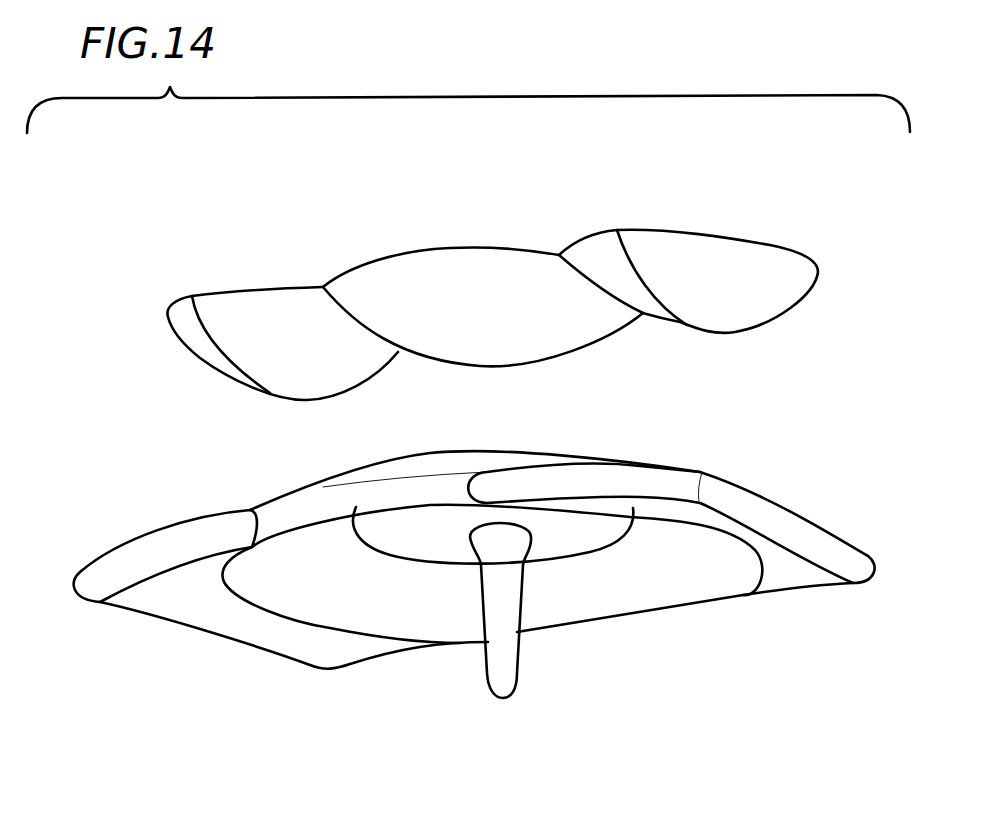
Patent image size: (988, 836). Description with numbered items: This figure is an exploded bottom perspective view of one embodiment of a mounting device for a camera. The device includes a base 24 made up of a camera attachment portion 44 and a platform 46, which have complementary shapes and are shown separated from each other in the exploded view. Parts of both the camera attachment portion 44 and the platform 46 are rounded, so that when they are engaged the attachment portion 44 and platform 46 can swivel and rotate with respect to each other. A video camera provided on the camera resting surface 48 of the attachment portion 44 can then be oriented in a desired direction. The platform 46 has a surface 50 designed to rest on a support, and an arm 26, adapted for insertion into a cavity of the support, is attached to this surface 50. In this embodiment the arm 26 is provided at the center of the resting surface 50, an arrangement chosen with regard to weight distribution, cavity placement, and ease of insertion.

The base 24 is at (135, 392).
The arm 26 is at (502, 675).
The camera attachment portion 44 is at (770, 245).
The platform 46 is at (810, 523).
The camera resting surface 48 is at (482, 248).
The surface 50 is at (638, 628).